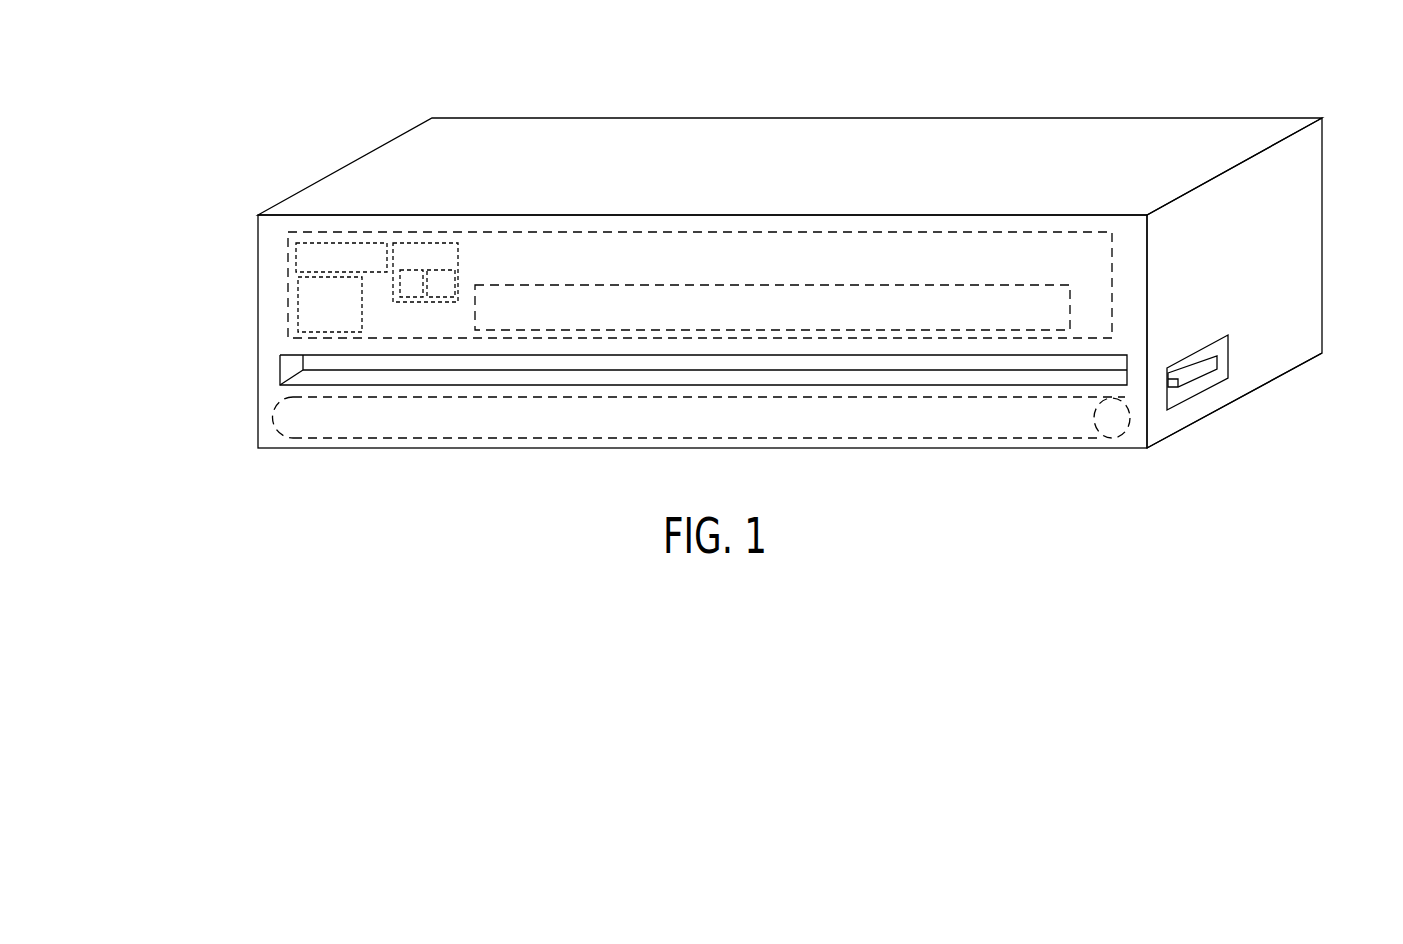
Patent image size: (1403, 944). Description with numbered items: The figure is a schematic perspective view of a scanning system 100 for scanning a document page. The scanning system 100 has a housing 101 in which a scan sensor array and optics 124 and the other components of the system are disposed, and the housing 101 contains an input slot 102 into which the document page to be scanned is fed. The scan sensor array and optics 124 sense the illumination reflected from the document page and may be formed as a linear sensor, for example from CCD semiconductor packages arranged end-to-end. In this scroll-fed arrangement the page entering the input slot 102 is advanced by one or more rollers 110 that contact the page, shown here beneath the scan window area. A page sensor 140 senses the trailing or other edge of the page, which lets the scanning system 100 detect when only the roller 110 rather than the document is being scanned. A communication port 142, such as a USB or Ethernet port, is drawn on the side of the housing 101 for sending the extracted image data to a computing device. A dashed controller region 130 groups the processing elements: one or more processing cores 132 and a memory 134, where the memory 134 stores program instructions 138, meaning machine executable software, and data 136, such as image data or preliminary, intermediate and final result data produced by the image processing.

The scanning system 100 is at (1022, 76).
The housing 101 is at (1284, 373).
The input slot 102 is at (1127, 358).
The roller 110 is at (515, 440).
The scan sensor array and optics 124 is at (850, 285).
The controller 130 is at (287, 300).
The processing core 132 is at (347, 239).
The memory 134 is at (427, 239).
The data 136 is at (404, 298).
The program instructions 138 is at (460, 283).
The page sensor 140 is at (328, 333).
The communication port 142 is at (1200, 394).